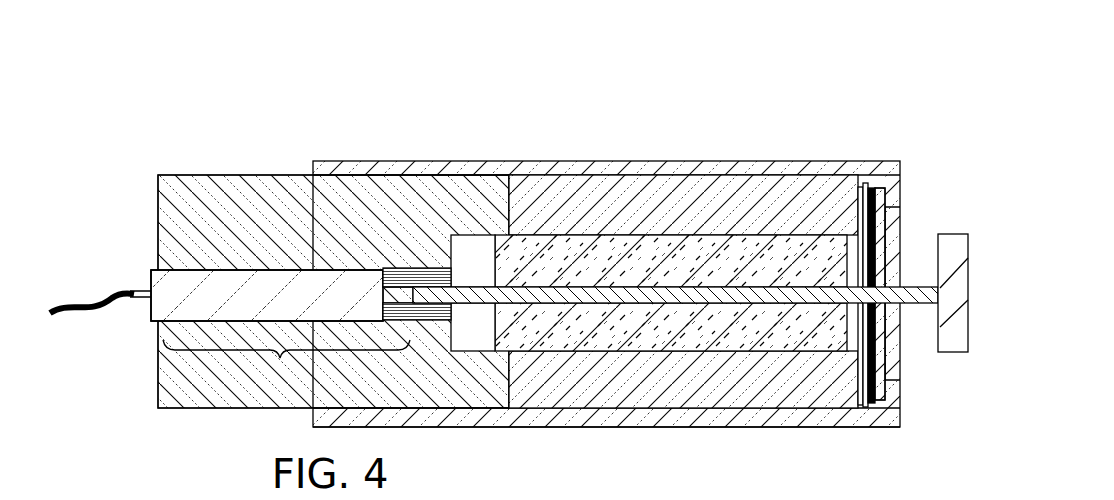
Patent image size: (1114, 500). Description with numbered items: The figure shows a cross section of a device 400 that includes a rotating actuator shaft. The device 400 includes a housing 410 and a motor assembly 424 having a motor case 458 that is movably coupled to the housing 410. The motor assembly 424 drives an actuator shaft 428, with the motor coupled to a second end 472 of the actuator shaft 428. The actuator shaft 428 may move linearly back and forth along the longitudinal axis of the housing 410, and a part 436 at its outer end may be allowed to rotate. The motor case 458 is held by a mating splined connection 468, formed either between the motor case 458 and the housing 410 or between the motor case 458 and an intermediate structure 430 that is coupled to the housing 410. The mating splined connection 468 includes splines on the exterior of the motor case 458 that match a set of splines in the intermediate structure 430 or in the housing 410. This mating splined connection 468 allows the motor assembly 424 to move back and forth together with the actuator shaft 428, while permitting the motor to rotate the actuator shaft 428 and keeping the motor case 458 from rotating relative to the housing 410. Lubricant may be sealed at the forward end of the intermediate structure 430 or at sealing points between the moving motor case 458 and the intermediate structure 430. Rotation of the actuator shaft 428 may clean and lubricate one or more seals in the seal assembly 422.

The device 400 is at (570, 273).
The housing 410 is at (452, 168).
The seal assembly 422 is at (880, 198).
The motor assembly 424 is at (280, 331).
The actuator shaft 428 is at (908, 287).
The intermediate structure 430 is at (228, 400).
The part 436 is at (968, 250).
The motor case 458 is at (297, 270).
The mating splined connection 468 is at (606, 463).
The second end of actuator shaft 472 is at (423, 283).